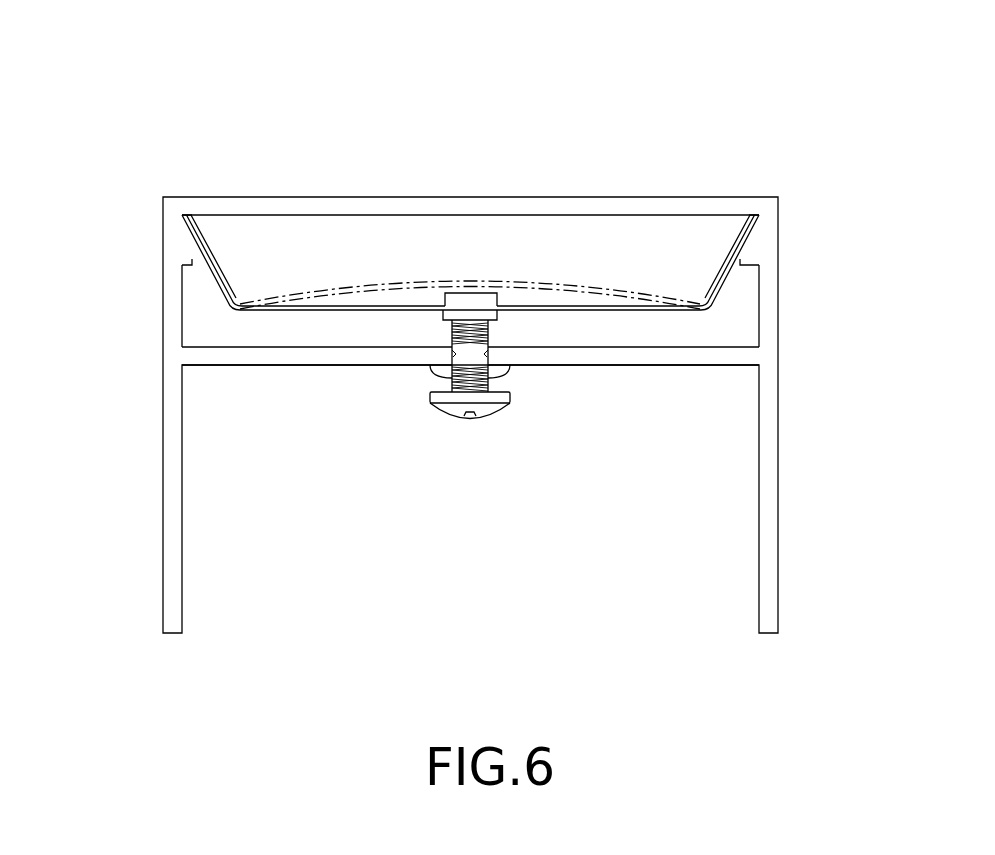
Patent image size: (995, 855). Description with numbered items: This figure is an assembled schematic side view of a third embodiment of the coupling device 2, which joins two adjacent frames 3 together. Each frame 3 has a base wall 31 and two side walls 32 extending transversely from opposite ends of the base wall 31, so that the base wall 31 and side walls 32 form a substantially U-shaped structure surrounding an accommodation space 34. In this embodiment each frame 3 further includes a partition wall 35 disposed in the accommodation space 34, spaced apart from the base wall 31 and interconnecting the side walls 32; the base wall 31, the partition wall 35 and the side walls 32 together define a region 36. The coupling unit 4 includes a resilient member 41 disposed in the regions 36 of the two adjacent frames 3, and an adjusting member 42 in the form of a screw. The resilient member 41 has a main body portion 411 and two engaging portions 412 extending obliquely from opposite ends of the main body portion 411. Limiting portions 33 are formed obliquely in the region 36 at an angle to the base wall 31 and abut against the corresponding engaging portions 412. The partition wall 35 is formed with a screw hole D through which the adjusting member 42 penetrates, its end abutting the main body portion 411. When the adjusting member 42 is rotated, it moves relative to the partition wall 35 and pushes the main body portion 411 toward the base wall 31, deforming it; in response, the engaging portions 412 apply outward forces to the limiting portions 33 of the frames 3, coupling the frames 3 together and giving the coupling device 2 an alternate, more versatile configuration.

The coupling device 2 is at (519, 130).
The frame 3 is at (166, 175).
The base wall 31 is at (400, 197).
The side walls 32 is at (163, 521).
The limiting portions 33 is at (192, 266).
The accommodation space 34 is at (389, 582).
The partition wall 35 is at (280, 366).
The region 36 is at (572, 238).
The coupling unit 4 is at (345, 345).
The resilient member 41 is at (656, 330).
The main body portion 411 is at (585, 311).
The engaging portions 412 is at (212, 247).
The adjusting member 42 is at (485, 412).
The screw hole D is at (443, 394).